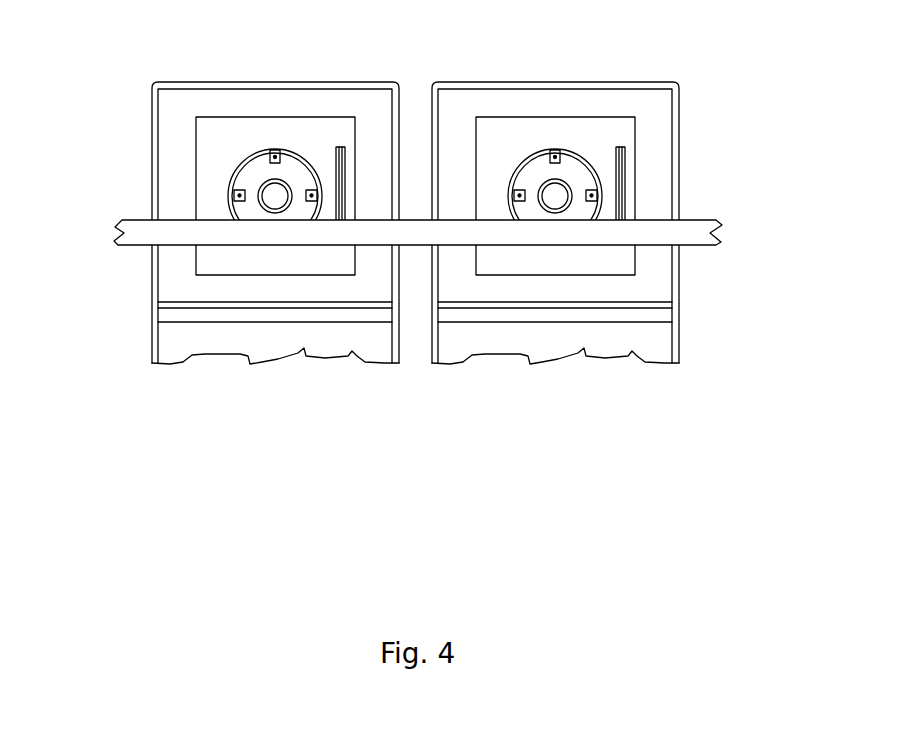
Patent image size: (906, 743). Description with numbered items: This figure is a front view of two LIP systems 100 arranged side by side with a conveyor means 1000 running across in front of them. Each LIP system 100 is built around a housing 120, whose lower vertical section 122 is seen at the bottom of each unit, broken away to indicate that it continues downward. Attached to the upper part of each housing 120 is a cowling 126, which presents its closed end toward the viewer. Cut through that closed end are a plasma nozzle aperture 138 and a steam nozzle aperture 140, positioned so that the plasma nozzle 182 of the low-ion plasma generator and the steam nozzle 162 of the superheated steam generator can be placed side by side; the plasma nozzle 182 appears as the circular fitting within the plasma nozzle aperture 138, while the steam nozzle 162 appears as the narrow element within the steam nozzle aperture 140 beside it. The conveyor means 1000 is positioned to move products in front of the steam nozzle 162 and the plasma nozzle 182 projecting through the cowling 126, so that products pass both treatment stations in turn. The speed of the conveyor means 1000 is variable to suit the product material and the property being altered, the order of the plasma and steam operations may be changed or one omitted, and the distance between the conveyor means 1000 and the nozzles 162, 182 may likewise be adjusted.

The LIP system 100 is at (401, 219).
The housing 120 is at (150, 292).
The vertical section 122 is at (223, 340).
The cowling 126 is at (175, 195).
The plasma nozzle aperture 138 is at (262, 148).
The steam nozzle aperture 140 is at (345, 146).
The steam nozzle 162 is at (337, 167).
The plasma nozzle 182 is at (247, 181).
The conveyor means 1000 is at (695, 238).